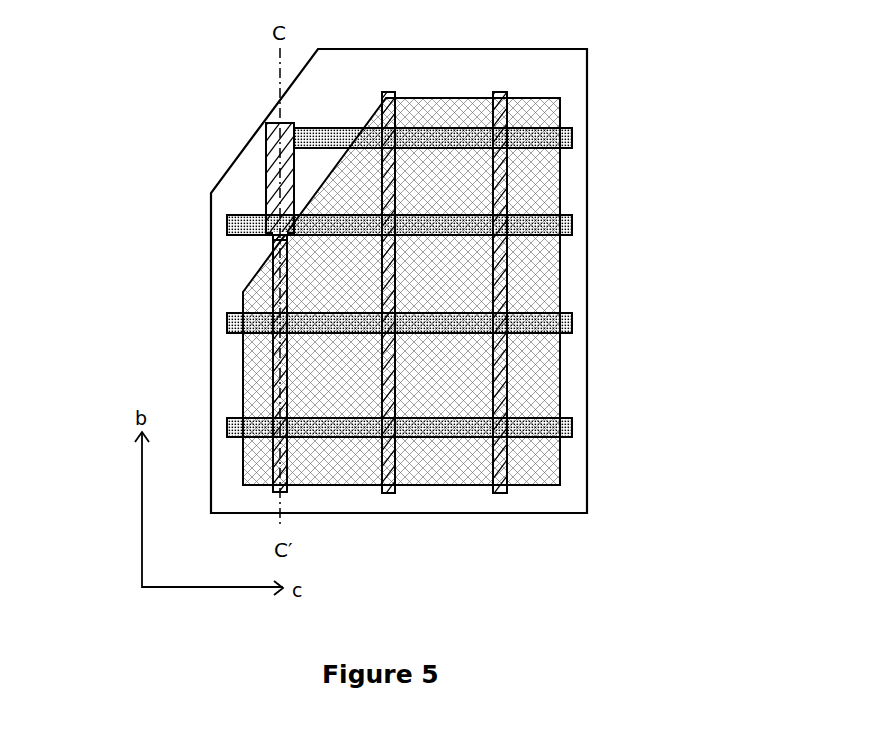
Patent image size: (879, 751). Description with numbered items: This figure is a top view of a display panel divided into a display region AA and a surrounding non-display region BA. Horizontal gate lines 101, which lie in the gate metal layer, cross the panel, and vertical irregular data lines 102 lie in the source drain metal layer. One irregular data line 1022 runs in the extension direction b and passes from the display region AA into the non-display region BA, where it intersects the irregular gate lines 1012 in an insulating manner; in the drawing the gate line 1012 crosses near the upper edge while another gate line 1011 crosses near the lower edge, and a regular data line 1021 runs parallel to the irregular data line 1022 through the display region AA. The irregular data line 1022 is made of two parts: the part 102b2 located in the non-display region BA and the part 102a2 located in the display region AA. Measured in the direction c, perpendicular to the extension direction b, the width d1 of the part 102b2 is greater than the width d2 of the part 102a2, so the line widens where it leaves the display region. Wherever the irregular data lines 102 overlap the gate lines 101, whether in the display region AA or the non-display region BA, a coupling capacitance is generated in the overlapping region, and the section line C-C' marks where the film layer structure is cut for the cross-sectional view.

The irregular gate lines 1012 is at (412, 143).
The second scanning line / first conductive line (101) 1011 is at (515, 427).
The data line / second conductive line (102) 1021 is at (498, 345).
The part of irregular data line in non-display region 102b2 is at (266, 124).
The part of irregular data line in display region 102a2 is at (277, 292).
The gate lines 101 is at (404, 282).
The irregular data lines 102 is at (370, 292).
The irregular data line 1022 is at (169, 293).
The non-display region BA is at (572, 98).
The display region AA is at (532, 180).
The width of part of irregular data line in non-display region d1 is at (245, 172).
The width of part of irregular data line in display region d2 is at (247, 372).